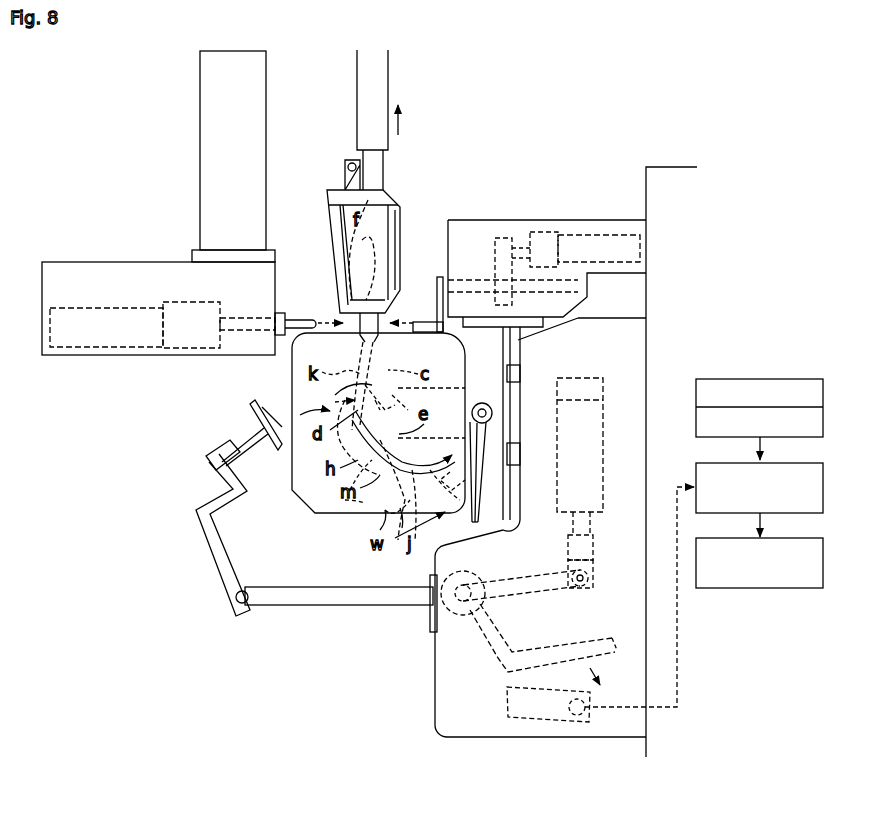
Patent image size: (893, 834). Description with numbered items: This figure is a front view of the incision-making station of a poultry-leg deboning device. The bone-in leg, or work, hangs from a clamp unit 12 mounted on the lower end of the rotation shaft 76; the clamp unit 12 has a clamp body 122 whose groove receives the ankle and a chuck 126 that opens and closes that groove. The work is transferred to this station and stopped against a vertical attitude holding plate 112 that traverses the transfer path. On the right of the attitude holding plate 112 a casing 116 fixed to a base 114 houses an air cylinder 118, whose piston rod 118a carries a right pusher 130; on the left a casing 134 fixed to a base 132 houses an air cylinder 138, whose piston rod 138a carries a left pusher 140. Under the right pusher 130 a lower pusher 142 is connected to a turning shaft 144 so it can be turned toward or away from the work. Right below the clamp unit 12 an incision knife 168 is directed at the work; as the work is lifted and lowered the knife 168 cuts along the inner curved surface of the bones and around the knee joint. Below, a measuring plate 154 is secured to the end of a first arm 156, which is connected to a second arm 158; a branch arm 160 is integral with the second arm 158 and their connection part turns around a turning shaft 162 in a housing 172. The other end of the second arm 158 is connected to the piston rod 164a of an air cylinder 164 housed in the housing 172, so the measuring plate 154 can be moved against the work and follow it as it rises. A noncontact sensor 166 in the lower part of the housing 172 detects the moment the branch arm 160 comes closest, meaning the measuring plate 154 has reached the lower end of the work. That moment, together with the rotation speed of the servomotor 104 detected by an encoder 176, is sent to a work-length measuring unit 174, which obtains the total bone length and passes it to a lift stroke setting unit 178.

The clamp unit 12 is at (327, 197).
The rotation shaft 76 is at (378, 76).
The servomotor 104 is at (767, 379).
The attitude holding plate 112 is at (292, 385).
The base 114 is at (657, 167).
The casing 116 is at (469, 220).
The air cylinder 118 is at (545, 232).
The piston rod 118a is at (510, 245).
The clamp body 122 is at (325, 232).
The chuck 126 is at (400, 230).
The right pusher 130 is at (437, 292).
The base 132 is at (200, 146).
The casing 134 is at (112, 262).
The air cylinder 138 is at (100, 308).
The piston rod 138a is at (244, 318).
The left pusher 140 is at (311, 317).
The lower pusher 142 is at (468, 500).
The turning shaft 144 is at (481, 402).
The measuring plate 154 is at (250, 408).
The first arm 156 is at (215, 548).
The second arm 158 is at (312, 586).
The branch arm 160 is at (550, 652).
The turning shaft 162 is at (473, 574).
The air cylinder 164 is at (572, 378).
The piston rod 164a is at (595, 562).
The noncontact sensor 166 is at (577, 720).
The incision knife 168 is at (386, 338).
The housing 172 is at (435, 712).
The work-length measuring unit 174 is at (696, 470).
The encoder 176 is at (696, 420).
The lift stroke setting unit 178 is at (757, 590).